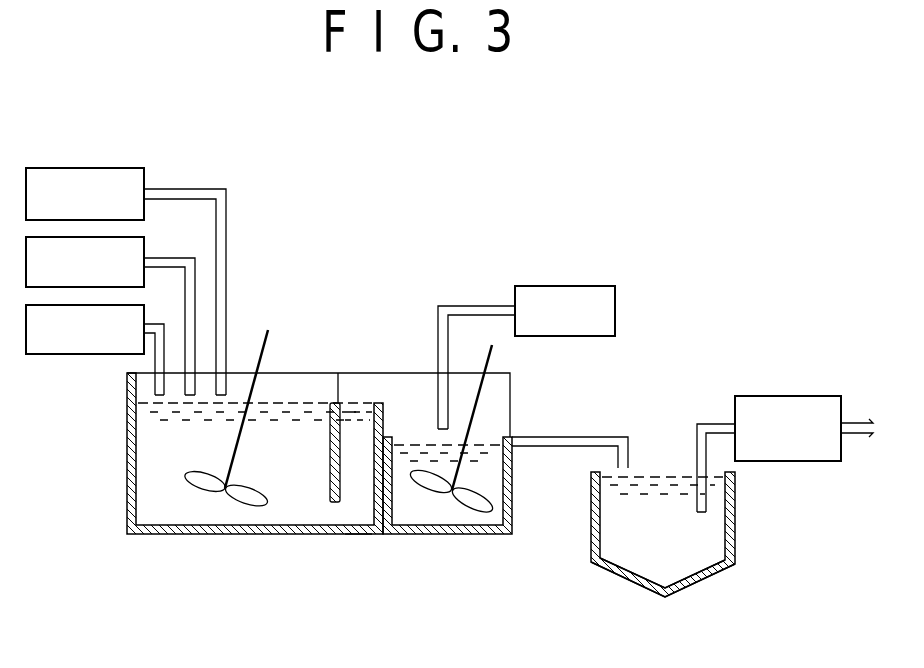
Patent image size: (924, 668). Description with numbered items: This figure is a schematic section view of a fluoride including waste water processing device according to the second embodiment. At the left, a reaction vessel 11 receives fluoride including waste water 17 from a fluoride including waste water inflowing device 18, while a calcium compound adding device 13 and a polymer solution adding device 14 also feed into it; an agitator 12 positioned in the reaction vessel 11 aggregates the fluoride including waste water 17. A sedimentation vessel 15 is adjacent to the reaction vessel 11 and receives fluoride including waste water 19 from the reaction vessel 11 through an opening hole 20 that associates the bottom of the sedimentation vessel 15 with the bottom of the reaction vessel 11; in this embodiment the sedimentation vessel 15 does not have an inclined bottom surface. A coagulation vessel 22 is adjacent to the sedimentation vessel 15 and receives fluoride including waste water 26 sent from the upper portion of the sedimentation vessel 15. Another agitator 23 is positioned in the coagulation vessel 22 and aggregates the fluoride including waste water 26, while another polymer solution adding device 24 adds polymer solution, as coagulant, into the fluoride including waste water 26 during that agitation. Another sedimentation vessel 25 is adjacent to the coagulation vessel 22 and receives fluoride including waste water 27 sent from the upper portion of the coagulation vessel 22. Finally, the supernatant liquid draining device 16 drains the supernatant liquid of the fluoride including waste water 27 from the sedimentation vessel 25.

The reaction vessel 11 is at (128, 498).
The agitator 12 is at (185, 475).
The calcium compound adding device 13 is at (106, 305).
The polymer solution adding device 14 is at (145, 240).
The sedimentation vessel 15 is at (356, 537).
The supernatant liquid draining device 16 is at (790, 395).
The fluoride including waste water 17 is at (200, 503).
The fluoride including waste water inflowing device 18 is at (145, 171).
The fluoride including waste water 19 is at (360, 470).
The opening hole 20 is at (335, 508).
The coagulation vessel 22 is at (488, 536).
The agitator 23 is at (483, 493).
The polymer solution adding device 24 is at (578, 285).
The sedimentation vessel 25 is at (734, 530).
The fluoride including waste water 26 is at (427, 502).
The fluoride including waste water 27 is at (633, 545).